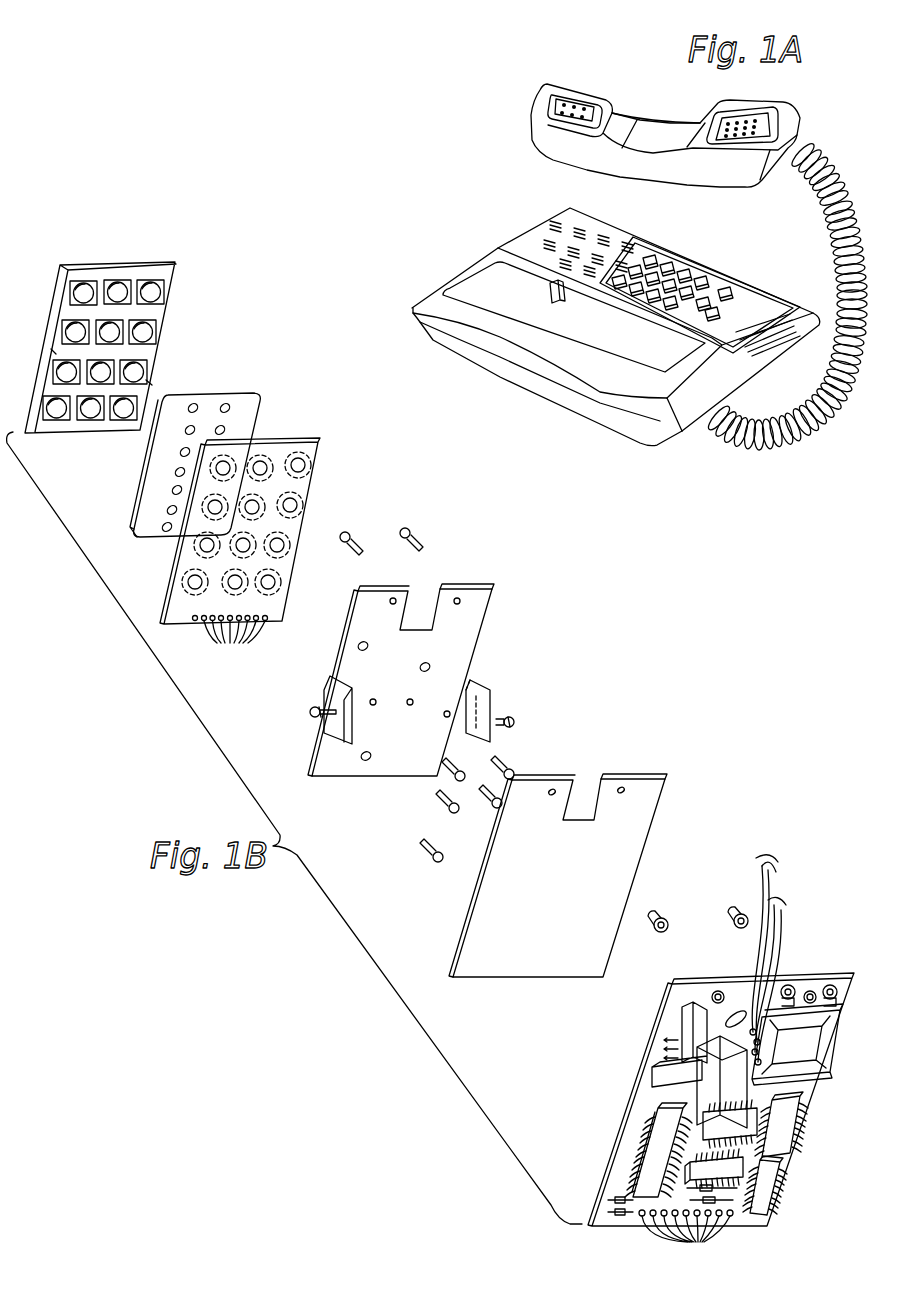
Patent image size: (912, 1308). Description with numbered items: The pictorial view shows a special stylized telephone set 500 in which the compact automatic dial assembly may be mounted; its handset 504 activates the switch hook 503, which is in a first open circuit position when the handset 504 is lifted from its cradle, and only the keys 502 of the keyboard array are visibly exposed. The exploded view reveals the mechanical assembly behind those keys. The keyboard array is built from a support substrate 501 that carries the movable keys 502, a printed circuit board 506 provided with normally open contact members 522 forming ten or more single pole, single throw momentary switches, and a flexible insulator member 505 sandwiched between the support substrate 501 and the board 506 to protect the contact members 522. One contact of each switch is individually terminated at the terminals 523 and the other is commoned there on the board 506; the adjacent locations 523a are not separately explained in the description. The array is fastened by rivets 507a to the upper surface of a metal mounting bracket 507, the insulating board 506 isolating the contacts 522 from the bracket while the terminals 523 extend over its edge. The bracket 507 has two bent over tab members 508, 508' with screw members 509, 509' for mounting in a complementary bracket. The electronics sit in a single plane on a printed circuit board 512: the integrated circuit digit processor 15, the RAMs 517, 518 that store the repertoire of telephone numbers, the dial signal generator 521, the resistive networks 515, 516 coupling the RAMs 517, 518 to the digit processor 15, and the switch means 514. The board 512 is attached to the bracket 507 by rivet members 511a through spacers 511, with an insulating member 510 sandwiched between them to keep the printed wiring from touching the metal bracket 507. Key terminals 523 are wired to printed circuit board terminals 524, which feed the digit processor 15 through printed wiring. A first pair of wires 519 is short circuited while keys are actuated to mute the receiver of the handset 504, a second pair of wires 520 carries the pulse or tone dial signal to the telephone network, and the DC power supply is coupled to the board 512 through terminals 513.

In FIG. 1A, the telephone set 500 is at (668, 446).
In FIG. 1A, the keys 502 is at (698, 279).
In FIG. 1B, the keys 502 is at (143, 338).
In FIG. 1A, the switch hook 503 is at (550, 285).
In FIG. 1A, the handset 504 is at (598, 92).
In FIG. 1B, the support substrate 501 is at (135, 266).
In FIG. 1B, the flexible insulator member 505 is at (231, 397).
In FIG. 1B, the printed circuit board 506 is at (287, 442).
In FIG. 1B, the metal mounting bracket 507 is at (487, 633).
In FIG. 1B, the rivets 507a is at (457, 823).
In FIG. 1B, the bent over tab member 508 is at (312, 702).
In FIG. 1B, the bent over tab member 508' is at (508, 705).
In FIG. 1B, the screw member 509 is at (299, 721).
In FIG. 1B, the screw member 509' is at (520, 733).
In FIG. 1B, the insulating member 510 is at (645, 778).
In FIG. 1B, the spacers 511 is at (730, 912).
In FIG. 1B, the rivet members 511a is at (408, 552).
In FIG. 1B, the printed circuit board 512 is at (840, 978).
In FIG. 1B, the terminals 513 is at (788, 985).
In FIG. 1B, the switch means 514 is at (682, 1030).
In FIG. 1B, the resistive network 515 is at (745, 1095).
In FIG. 1B, the resistive network 516 is at (772, 1152).
In FIG. 1B, the RAM 517 is at (787, 1127).
In FIG. 1B, the RAM 518 is at (766, 1188).
In FIG. 1B, the first pair of wires 519 is at (773, 880).
In FIG. 1B, the second pair of wires 520 is at (774, 922).
In FIG. 1B, the dial signal generator 521 is at (712, 1094).
In FIG. 1B, the contact members 522 is at (303, 470).
In FIG. 1B, the terminals 523 is at (236, 643).
In FIG. 1B, the lead holes 523a is at (268, 617).
In FIG. 1B, the printed circuit board terminals 524 is at (690, 1232).
In FIG. 1B, the integrated circuit digit processor 15 is at (652, 1157).